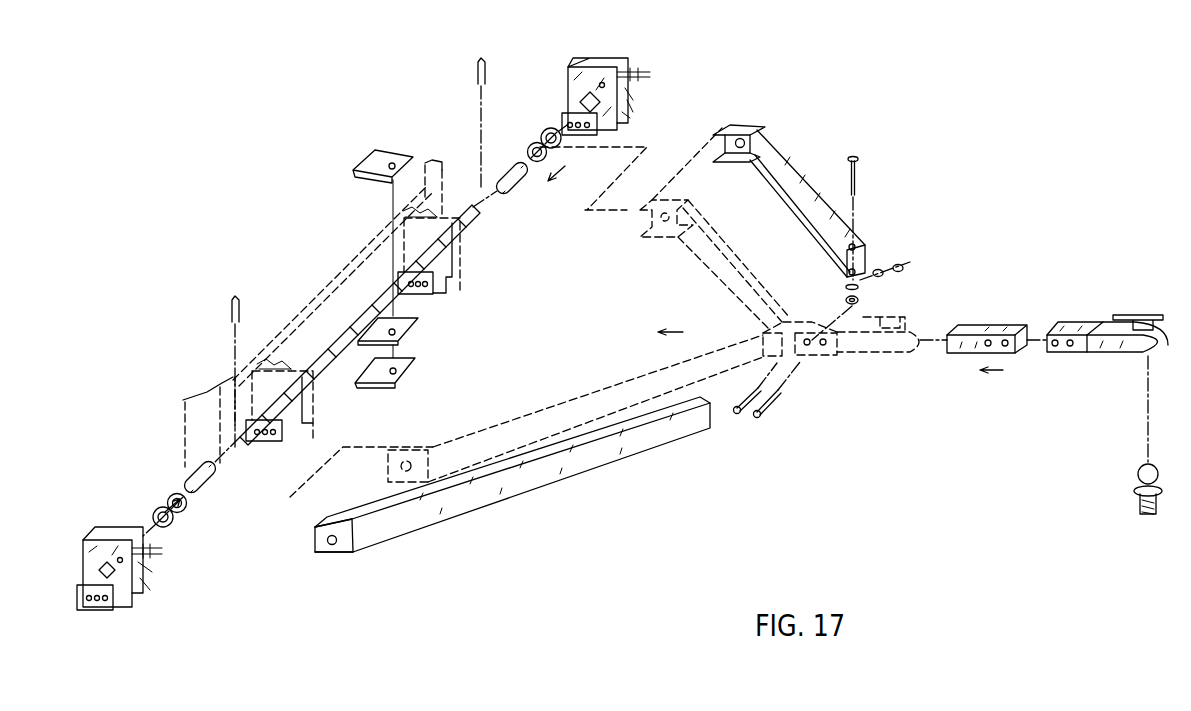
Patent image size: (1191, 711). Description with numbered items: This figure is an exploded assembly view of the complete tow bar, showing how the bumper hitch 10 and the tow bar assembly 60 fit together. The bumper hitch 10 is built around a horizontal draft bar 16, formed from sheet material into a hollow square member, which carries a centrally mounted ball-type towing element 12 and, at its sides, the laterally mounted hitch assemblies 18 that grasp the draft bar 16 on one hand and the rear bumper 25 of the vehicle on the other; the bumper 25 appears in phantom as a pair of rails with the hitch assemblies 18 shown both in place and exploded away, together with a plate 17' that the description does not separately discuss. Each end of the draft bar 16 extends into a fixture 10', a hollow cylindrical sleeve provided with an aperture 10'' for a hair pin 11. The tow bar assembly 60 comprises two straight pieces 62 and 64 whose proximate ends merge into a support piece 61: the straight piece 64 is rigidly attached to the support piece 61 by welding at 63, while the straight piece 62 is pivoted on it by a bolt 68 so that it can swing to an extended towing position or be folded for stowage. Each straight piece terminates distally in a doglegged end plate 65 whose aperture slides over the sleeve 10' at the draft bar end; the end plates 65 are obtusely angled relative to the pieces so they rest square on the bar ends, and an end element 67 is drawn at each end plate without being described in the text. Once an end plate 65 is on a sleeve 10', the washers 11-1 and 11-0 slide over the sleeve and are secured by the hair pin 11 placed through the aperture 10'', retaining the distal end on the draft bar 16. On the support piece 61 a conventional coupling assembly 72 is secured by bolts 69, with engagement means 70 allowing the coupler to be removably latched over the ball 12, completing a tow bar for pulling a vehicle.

The bumper hitch 10 is at (417, 330).
The fixture 10' is at (347, 294).
The aperture 10'' is at (358, 308).
The hair pin 11 is at (474, 78).
The washer 11-0 is at (562, 139).
The washer 11-1 is at (556, 158).
The towing element 12 is at (1133, 490).
The draft bar 16 is at (330, 372).
The mounting plate 17' is at (381, 269).
The hitch assembly 18 is at (630, 77).
The rear bumper 25 is at (330, 278).
The tow bar assembly 60 is at (827, 361).
The support piece 61 is at (982, 328).
The straight piece 62 is at (762, 180).
The welding 63 is at (783, 355).
The straight piece 64 is at (580, 470).
The end plate 65 is at (743, 133).
The end plate with hole 67 is at (720, 131).
The bolt 68 is at (862, 184).
The bolt 69 is at (737, 417).
The engagement means 70 is at (1127, 315).
The coupling assembly 72 is at (1165, 322).